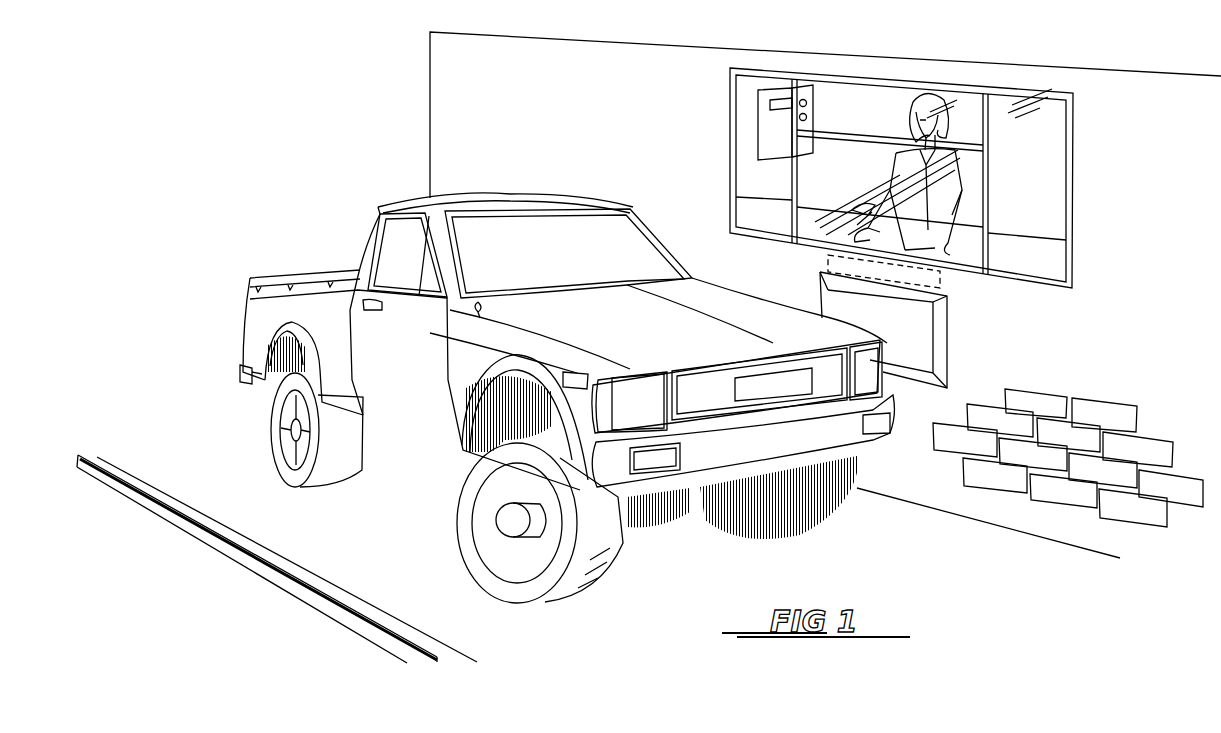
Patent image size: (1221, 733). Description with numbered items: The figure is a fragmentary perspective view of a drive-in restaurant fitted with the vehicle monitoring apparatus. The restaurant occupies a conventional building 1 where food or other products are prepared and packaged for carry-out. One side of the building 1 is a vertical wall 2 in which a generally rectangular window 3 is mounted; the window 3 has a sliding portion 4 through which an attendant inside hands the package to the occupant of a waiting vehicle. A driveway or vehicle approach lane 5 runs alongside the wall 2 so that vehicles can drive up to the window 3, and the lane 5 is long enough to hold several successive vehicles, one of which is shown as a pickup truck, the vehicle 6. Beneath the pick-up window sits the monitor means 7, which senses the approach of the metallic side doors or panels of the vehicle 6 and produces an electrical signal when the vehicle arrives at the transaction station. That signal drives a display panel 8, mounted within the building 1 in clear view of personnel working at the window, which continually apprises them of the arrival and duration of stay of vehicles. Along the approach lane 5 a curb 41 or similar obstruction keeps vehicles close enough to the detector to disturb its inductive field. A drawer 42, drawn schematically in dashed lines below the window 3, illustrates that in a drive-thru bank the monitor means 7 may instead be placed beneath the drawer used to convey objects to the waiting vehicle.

The building 1 is at (576, 96).
The vertical wall 2 is at (1150, 215).
The window 3 is at (843, 80).
The sliding portion 4 is at (808, 228).
The vehicle approach lane 5 is at (878, 568).
The vehicle 6 is at (540, 192).
The monitor means 7 is at (933, 350).
The display panel 8 is at (745, 117).
The curb 41 is at (310, 583).
The drawer 42 is at (940, 288).